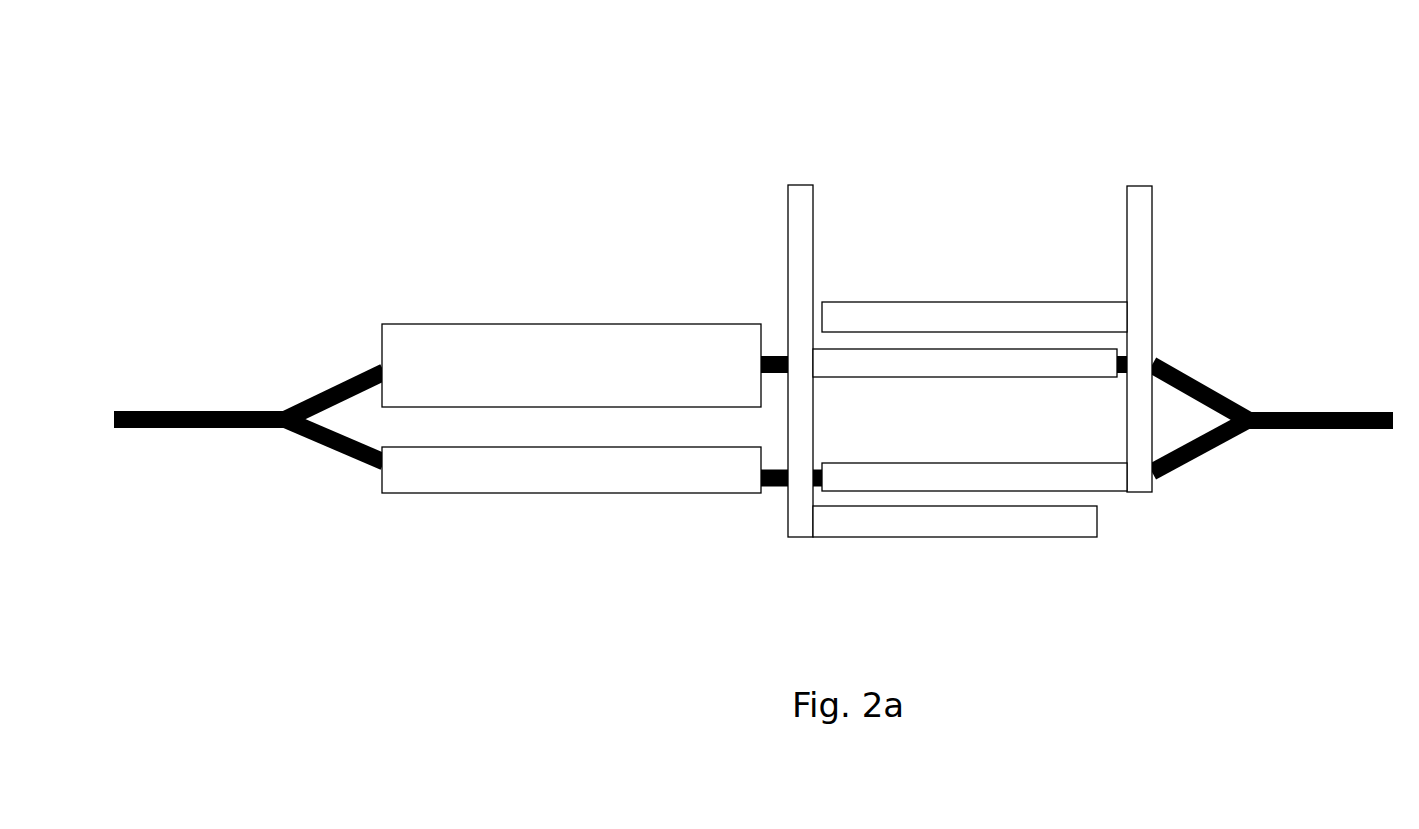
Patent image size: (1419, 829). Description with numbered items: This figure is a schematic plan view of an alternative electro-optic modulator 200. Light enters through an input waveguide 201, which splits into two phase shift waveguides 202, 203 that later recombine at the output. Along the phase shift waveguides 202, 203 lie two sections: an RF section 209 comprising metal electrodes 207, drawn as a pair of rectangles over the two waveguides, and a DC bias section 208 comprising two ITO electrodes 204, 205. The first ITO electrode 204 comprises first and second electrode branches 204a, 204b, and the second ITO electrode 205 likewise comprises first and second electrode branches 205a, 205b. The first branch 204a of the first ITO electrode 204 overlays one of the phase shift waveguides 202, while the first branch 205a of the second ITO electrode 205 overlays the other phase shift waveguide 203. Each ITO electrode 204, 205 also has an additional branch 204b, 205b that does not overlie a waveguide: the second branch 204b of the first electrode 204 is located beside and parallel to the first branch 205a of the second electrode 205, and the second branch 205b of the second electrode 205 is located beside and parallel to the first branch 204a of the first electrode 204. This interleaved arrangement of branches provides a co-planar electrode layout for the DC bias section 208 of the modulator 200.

The modulator 200 is at (408, 214).
The input waveguide 201 is at (204, 429).
The phase shift waveguide 202 is at (318, 393).
The phase shift waveguide 203 is at (350, 465).
The first ITO electrode 204 is at (813, 214).
The first branch of the first ITO electrode 204a is at (832, 382).
The second branch of the first ITO electrode 204b is at (1102, 540).
The second ITO electrode 205 is at (1152, 214).
The first branch of the second ITO electrode 205a is at (1125, 460).
The second branch of the second ITO electrode 205b is at (1123, 303).
The metal electrodes 207 is at (417, 324).
The DC bias section 208 is at (1001, 231).
The RF section 209 is at (556, 290).